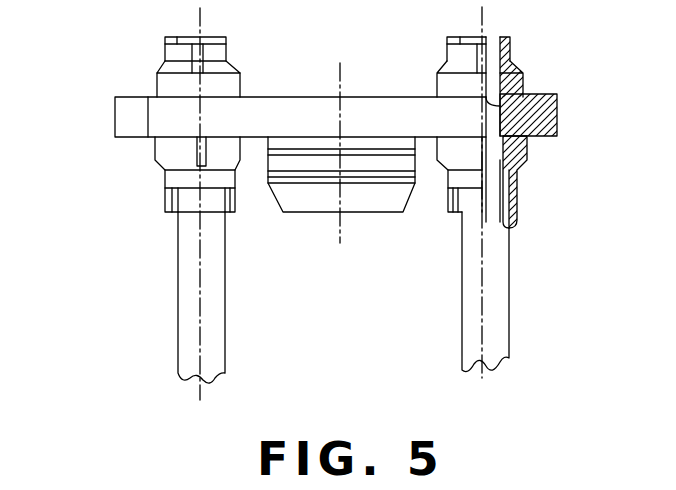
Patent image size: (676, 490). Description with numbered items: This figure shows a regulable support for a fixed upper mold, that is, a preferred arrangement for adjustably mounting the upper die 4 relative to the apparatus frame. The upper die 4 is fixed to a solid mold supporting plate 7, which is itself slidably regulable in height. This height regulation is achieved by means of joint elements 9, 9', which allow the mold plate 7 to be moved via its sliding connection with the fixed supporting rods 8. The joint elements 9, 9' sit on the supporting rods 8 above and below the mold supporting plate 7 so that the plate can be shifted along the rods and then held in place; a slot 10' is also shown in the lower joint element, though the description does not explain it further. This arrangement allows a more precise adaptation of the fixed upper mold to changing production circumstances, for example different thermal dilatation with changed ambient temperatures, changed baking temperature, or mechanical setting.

The upper die 4 is at (368, 197).
The mold supporting plate 7 is at (387, 100).
The supporting rods 8 is at (192, 310).
The joint element 9 is at (291, 144).
The joint element 9' is at (295, 43).
The slot 10' is at (243, 201).